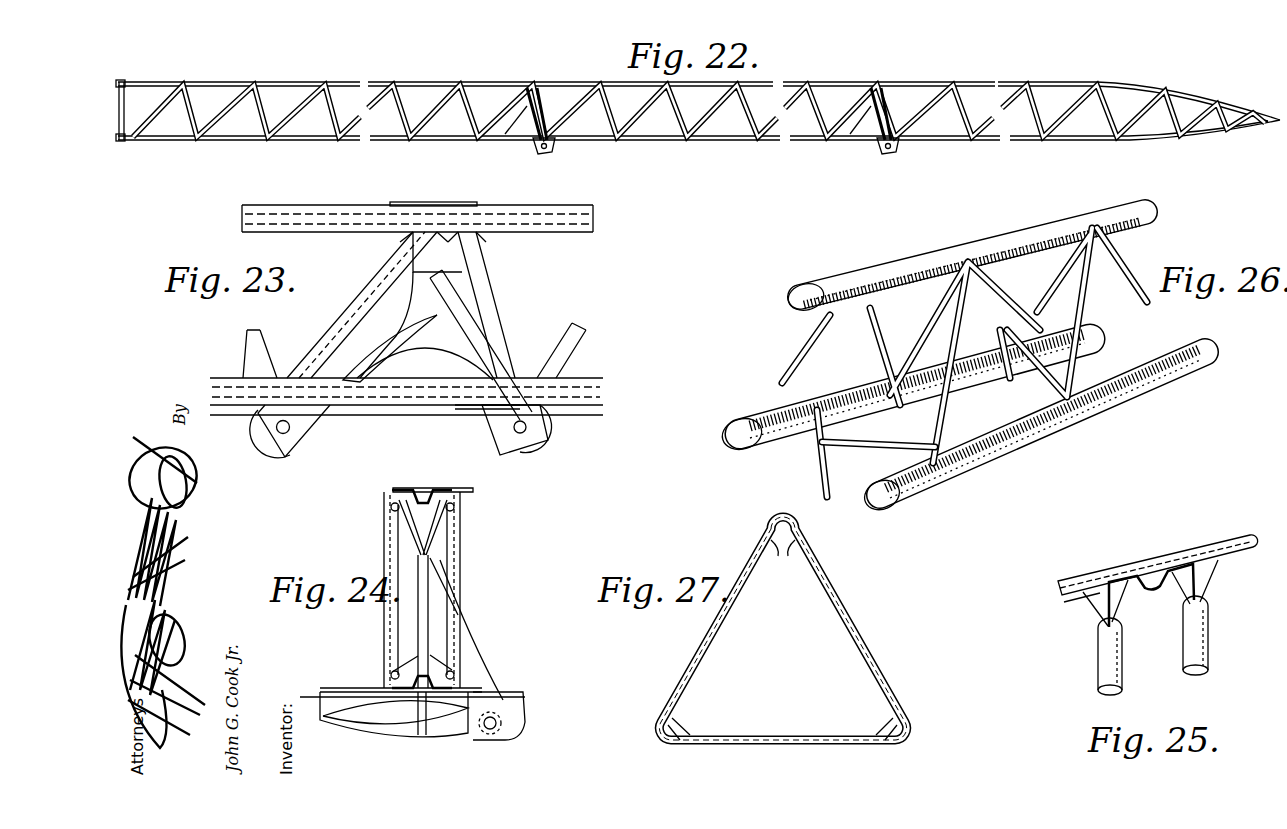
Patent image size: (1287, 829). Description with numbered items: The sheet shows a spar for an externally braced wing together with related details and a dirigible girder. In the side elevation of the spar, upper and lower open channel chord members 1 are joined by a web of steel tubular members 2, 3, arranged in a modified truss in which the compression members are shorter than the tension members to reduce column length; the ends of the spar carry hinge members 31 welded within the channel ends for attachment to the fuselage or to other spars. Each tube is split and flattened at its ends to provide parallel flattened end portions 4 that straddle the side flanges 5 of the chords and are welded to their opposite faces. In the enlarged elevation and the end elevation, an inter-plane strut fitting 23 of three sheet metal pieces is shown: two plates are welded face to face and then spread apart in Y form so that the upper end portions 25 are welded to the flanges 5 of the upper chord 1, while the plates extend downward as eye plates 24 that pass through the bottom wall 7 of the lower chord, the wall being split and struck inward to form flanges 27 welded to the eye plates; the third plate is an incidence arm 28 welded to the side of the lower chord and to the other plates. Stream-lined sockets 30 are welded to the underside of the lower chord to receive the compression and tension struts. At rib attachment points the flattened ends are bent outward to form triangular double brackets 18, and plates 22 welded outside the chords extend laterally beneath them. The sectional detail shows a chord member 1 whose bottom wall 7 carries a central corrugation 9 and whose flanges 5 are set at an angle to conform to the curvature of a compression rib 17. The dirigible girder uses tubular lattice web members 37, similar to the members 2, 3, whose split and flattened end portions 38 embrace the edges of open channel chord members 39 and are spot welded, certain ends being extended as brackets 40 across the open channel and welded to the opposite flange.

In FIG. 22, the channel chord member 1 is at (948, 141).
In FIG. 23, the channel chord member 1 is at (580, 210).
In FIG. 24, the channel chord member 1 is at (452, 486).
In FIG. 25, the channel chord member 1 is at (1126, 576).
In FIG. 22, the tubular web member 2 is at (708, 124).
In FIG. 23, the tubular web member 2 is at (358, 302).
In FIG. 24, the tubular web member 2 is at (462, 574).
In FIG. 25, the tubular web member 2 is at (1182, 646).
In FIG. 22, the tubular web member 3 is at (746, 112).
In FIG. 23, the tubular web member 3 is at (487, 278).
In FIG. 22, the flattened end portion 4 is at (460, 84).
In FIG. 23, the flattened end portion 4 is at (466, 212).
In FIG. 24, the flattened end portion 4 is at (388, 666).
In FIG. 25, the flattened end portion 4 is at (1100, 620).
In FIG. 24, the side flange 5 is at (388, 502).
In FIG. 25, the side flange 5 is at (1100, 606).
In FIG. 25, the bottom wall 7 is at (1178, 566).
In FIG. 24, the corrugation 9 is at (420, 486).
In FIG. 25, the corrugation 9 is at (1155, 582).
In FIG. 25, the compression rib 17 is at (1244, 538).
In FIG. 24, the double bracket 18 is at (394, 490).
In FIG. 25, the double bracket 18 is at (1086, 600).
In FIG. 23, the plate 22 is at (452, 194).
In FIG. 24, the plate 22 is at (430, 486).
In FIG. 22, the inter-plane strut fitting 23 is at (538, 112).
In FIG. 23, the inter-plane strut fitting 23 is at (482, 302).
In FIG. 24, the inter-plane strut fitting 23 is at (418, 582).
In FIG. 23, the eye plate 24 is at (262, 437).
In FIG. 24, the eye plate 24 is at (420, 736).
In FIG. 23, the upper end portion 25 is at (432, 258).
In FIG. 24, the upper end portion 25 is at (418, 532).
In FIG. 24, the flange 27 is at (391, 682).
In FIG. 22, the incidence arm 28 is at (550, 122).
In FIG. 23, the incidence arm 28 is at (492, 366).
In FIG. 24, the incidence arm 28 is at (470, 670).
In FIG. 22, the stream-lined socket 30 is at (539, 151).
In FIG. 23, the stream-lined socket 30 is at (300, 438).
In FIG. 24, the stream-lined socket 30 is at (362, 736).
In FIG. 22, the hinge member 31 is at (120, 80).
In FIG. 27, the lattice web member 37 is at (720, 612).
In FIG. 26, the lattice web member 37 is at (1122, 282).
In FIG. 26, the flattened end portion 38 is at (968, 260).
In FIG. 27, the open channel chord member 39 is at (903, 720).
In FIG. 26, the open channel chord member 39 is at (880, 272).
In FIG. 27, the bracket 40 is at (783, 545).
In FIG. 26, the bracket 40 is at (968, 306).